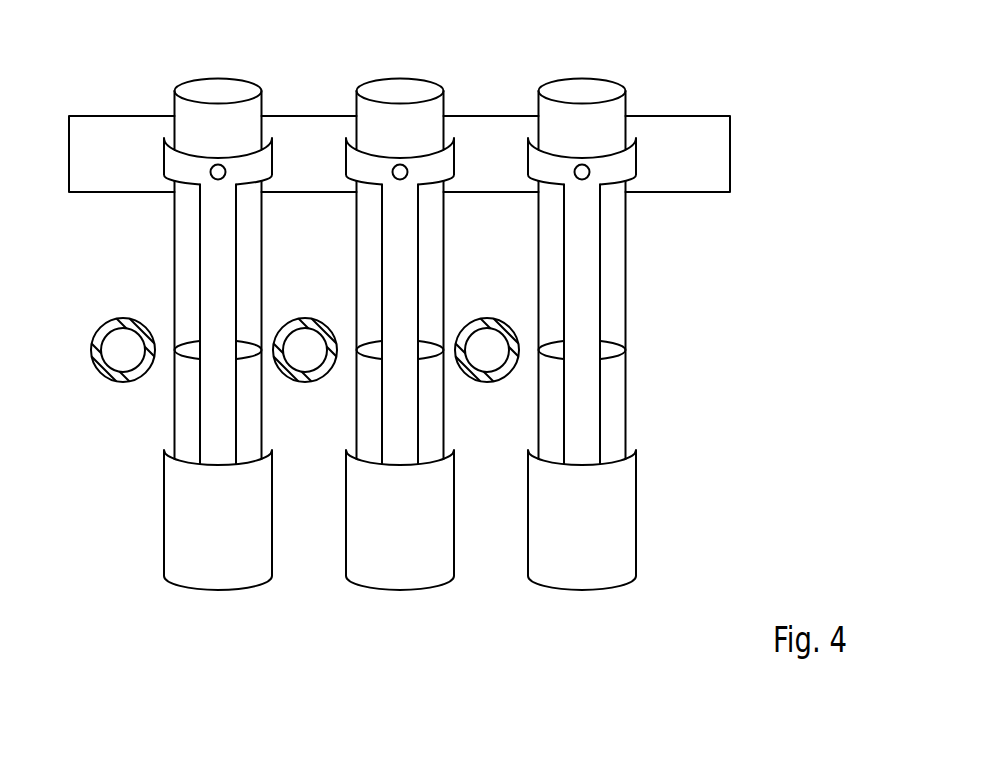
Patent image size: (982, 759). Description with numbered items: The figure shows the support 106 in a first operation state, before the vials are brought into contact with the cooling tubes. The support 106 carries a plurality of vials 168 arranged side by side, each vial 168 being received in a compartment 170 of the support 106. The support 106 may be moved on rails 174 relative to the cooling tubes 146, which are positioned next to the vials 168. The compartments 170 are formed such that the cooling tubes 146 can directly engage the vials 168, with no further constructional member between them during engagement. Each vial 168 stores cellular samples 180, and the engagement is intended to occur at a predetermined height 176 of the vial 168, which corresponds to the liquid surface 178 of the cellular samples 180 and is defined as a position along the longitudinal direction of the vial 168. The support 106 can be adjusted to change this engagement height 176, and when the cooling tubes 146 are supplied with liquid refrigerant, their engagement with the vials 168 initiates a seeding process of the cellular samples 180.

The support 106 is at (745, 150).
The cooling tubes 146 is at (120, 322).
The vials 168 is at (215, 77).
The compartments 170 is at (240, 525).
The rails 174 is at (688, 128).
The predetermined height 176 is at (617, 342).
The liquid surface 178 is at (400, 350).
The cellular samples 180 is at (248, 423).